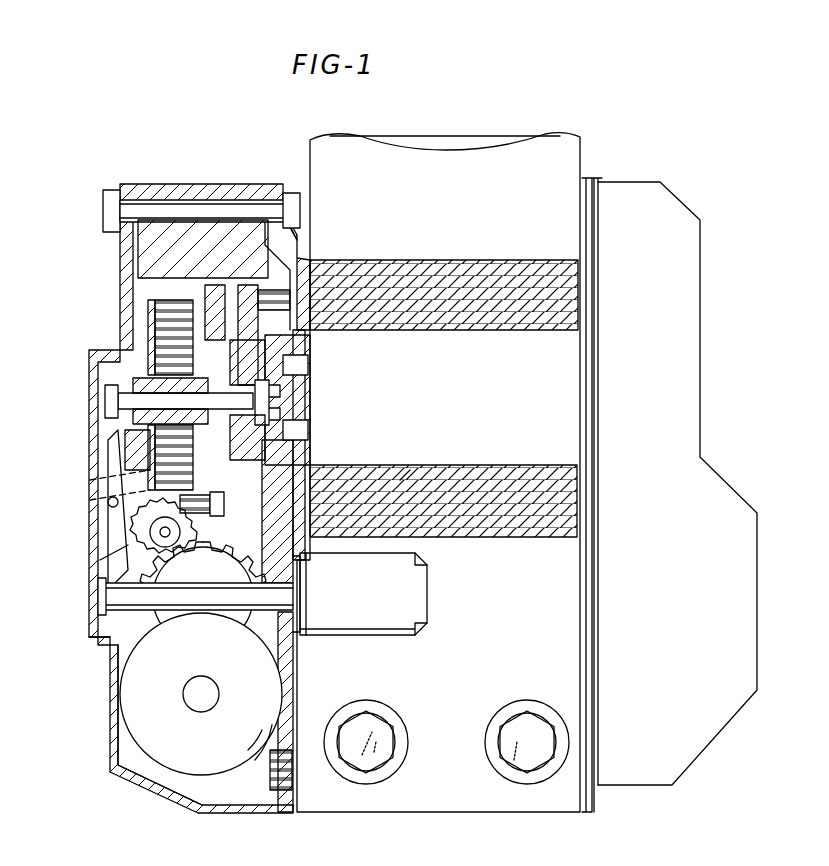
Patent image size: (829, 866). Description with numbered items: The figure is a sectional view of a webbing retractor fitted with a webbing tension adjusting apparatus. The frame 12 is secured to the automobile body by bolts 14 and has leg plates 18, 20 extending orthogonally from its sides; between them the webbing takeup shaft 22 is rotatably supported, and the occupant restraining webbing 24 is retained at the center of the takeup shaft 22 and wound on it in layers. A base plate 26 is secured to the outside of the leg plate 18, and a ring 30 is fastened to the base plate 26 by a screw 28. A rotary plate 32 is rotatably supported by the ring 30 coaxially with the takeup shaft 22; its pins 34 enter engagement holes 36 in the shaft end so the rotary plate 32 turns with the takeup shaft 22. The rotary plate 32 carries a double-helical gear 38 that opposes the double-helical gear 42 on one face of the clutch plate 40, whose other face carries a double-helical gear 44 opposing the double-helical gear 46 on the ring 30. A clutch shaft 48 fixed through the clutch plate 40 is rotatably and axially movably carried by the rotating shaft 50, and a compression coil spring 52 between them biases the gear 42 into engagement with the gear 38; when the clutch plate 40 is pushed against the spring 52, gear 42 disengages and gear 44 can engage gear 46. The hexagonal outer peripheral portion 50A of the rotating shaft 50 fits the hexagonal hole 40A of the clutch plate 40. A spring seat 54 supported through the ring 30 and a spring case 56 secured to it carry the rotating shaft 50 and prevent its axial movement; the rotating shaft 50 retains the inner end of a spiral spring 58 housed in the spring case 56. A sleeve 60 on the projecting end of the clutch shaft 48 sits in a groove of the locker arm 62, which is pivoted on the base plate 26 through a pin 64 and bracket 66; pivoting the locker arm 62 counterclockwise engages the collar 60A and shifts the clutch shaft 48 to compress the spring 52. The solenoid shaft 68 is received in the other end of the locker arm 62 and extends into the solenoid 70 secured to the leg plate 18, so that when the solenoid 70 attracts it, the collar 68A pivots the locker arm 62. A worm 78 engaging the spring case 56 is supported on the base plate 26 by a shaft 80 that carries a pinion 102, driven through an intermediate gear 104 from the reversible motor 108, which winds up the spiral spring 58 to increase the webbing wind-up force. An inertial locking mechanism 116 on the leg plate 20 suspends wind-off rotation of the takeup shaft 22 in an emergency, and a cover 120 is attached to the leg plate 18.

The frame 12 is at (408, 810).
The bolts 14 is at (378, 724).
The leg plate 18 is at (300, 250).
The leg plate 20 is at (580, 236).
The webbing takeup shaft 22 is at (570, 372).
The occupant restraining webbing 24 is at (572, 160).
The base plate 26 is at (198, 195).
The screw 28 is at (290, 240).
The ring 30 is at (270, 550).
The rotary plate 32 is at (318, 348).
The pins 34 is at (310, 385).
The engagement holes 36 is at (282, 395).
The double-helical gear 38 is at (395, 462).
The clutch plate 40 is at (268, 455).
The hexagonal hole 40A is at (268, 368).
The double-helical gear 42 is at (454, 458).
The double-helical gear 44 is at (240, 305).
The double-helical gear 46 is at (213, 300).
The clutch shaft 48 is at (115, 412).
The rotating shaft 50 is at (140, 385).
The outer peripheral portion 50A is at (203, 249).
The compression coil spring 52 is at (270, 405).
The spring seat 54 is at (224, 504).
The spring case 56 is at (165, 340).
The spiral spring 58 is at (165, 315).
The sleeve 60 is at (130, 402).
The collar 60A is at (130, 425).
The locker arm 62 is at (100, 555).
The pin 64 is at (108, 510).
The bracket 66 is at (98, 490).
The solenoid shaft 68 is at (95, 655).
The collar 68A is at (98, 605).
The solenoid 70 is at (420, 600).
The worm 78 is at (190, 522).
The shaft 80 is at (199, 597).
The pinion 102 is at (160, 575).
The intermediate gear 104 is at (302, 578).
The reversible motor 108 is at (270, 680).
The inertial locking mechanism 116 is at (688, 357).
The cover 120 is at (110, 758).